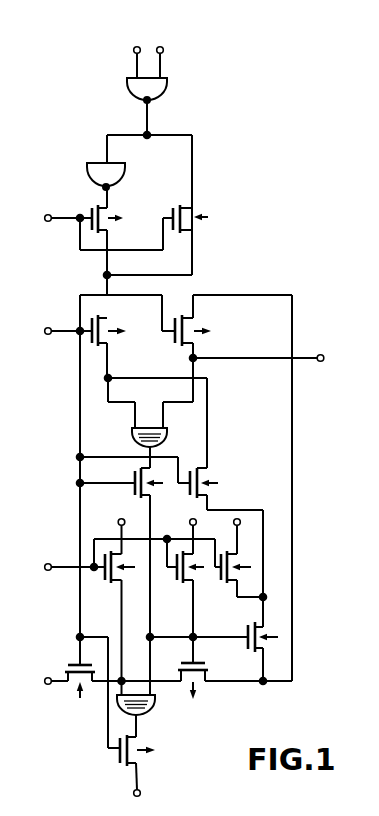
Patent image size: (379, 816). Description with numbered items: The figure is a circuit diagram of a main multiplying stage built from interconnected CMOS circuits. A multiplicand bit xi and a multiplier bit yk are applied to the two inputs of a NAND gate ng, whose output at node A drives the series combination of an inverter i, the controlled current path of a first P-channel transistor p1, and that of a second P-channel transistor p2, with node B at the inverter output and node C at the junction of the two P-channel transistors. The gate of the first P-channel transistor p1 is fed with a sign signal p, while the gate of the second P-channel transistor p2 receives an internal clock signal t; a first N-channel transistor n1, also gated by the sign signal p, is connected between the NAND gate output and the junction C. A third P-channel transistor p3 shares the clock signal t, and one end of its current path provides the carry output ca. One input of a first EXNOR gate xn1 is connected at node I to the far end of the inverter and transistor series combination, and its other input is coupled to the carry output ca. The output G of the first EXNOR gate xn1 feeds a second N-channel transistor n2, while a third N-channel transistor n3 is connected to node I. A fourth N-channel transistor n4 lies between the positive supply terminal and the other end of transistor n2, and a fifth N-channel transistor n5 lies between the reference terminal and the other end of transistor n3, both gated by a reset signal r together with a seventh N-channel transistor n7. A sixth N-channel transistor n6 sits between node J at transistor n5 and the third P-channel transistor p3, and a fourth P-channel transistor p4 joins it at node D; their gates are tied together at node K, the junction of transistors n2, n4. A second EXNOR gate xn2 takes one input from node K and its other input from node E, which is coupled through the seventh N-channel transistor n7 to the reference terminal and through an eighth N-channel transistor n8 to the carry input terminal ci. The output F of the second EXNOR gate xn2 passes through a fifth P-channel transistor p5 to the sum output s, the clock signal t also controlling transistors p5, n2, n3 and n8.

The multiplicand bit xi is at (131, 51).
The multiplier bit yk is at (162, 51).
The NAND gate ng is at (165, 90).
The node A is at (156, 132).
The inverter i is at (122, 176).
The node B is at (104, 191).
The first P-channel transistor p1 is at (118, 212).
The first N-channel transistor n1 is at (199, 212).
The sign signal p is at (101, 229).
The node C is at (105, 275).
The second P-channel transistor p2 is at (115, 323).
The third P-channel transistor p3 is at (202, 323).
The internal clock signal t is at (63, 331).
The carry output ca is at (271, 359).
The node I is at (111, 376).
The first EXNOR gate xn1 is at (166, 438).
The node G is at (148, 462).
The second N-channel transistor n2 is at (120, 481).
The third N-channel transistor n3 is at (159, 476).
The reset signal r is at (70, 568).
The seventh N-channel transistor n7 is at (111, 579).
The fourth N-channel transistor n4 is at (182, 579).
The fifth N-channel transistor n5 is at (228, 579).
The node J is at (266, 597).
The node K is at (152, 636).
The sixth N-channel transistor n6 is at (248, 643).
The eighth N-channel transistor n8 is at (81, 692).
The carry signal input terminal ci is at (47, 682).
The node E is at (124, 679).
The fourth P-channel transistor p4 is at (207, 688).
The node D is at (267, 684).
The second EXNOR gate xn2 is at (153, 709).
The node F is at (140, 730).
The fifth P-channel transistor p5 is at (123, 758).
The sum output s is at (144, 782).